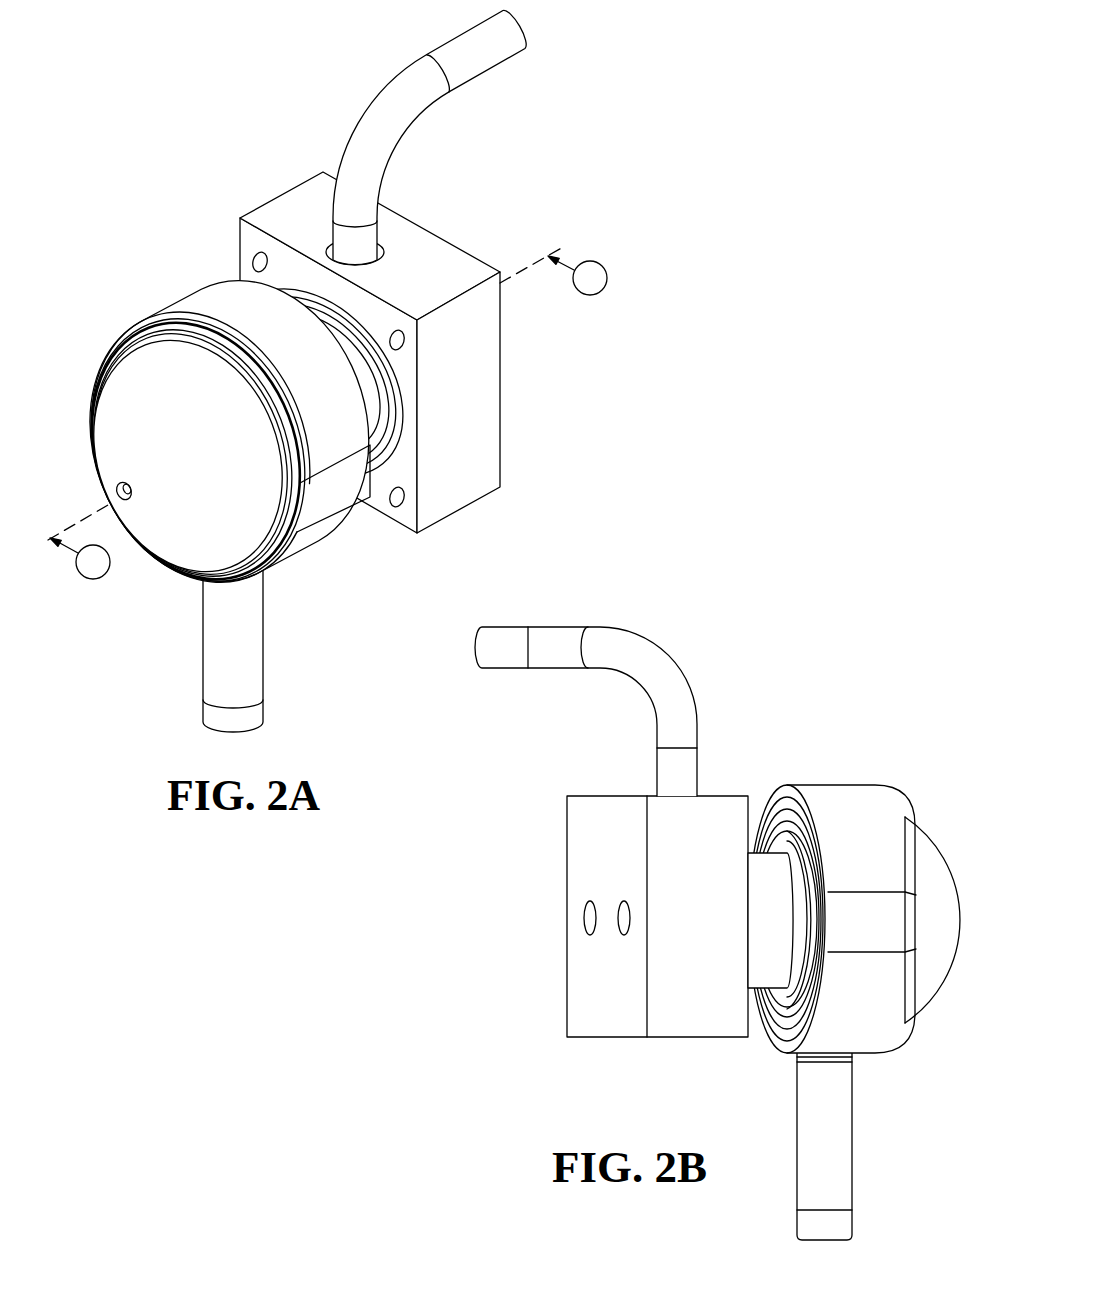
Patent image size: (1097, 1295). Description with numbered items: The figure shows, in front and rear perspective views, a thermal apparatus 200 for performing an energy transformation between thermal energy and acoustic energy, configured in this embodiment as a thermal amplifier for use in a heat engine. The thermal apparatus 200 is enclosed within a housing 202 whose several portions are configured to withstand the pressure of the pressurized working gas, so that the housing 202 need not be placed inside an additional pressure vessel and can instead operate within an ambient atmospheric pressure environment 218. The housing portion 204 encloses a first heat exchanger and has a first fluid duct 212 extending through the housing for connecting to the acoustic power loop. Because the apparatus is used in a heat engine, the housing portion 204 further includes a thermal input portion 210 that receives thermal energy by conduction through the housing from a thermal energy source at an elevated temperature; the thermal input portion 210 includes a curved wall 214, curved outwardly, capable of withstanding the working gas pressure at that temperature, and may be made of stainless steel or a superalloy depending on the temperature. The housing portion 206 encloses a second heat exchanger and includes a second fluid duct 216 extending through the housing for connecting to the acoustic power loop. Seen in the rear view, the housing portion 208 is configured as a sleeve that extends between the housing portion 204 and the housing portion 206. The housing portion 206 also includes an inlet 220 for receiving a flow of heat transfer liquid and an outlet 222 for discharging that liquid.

In FIG. 2A, the thermal apparatus 200 is at (156, 130).
In FIG. 2B, the thermal apparatus 200 is at (794, 678).
In FIG. 2A, the housing 202 is at (188, 196).
In FIG. 2A, the housing portion 204 is at (187, 305).
In FIG. 2B, the housing portion 204 is at (838, 798).
In FIG. 2A, the housing portion 206 is at (250, 232).
In FIG. 2B, the housing portion 206 is at (583, 802).
In FIG. 2A, the housing portion 208 is at (285, 296).
In FIG. 2B, the housing portion 208 is at (765, 865).
In FIG. 2A, the thermal input portion 210 is at (103, 443).
In FIG. 2A, the first fluid duct 212 is at (263, 592).
In FIG. 2A, the curved wall 214 is at (212, 541).
In FIG. 2A, the second fluid duct 216 is at (318, 226).
In FIG. 2A, the ambient atmospheric pressure environment 218 is at (85, 497).
In FIG. 2B, the inlet 220 is at (586, 918).
In FIG. 2B, the outlet 222 is at (620, 918).